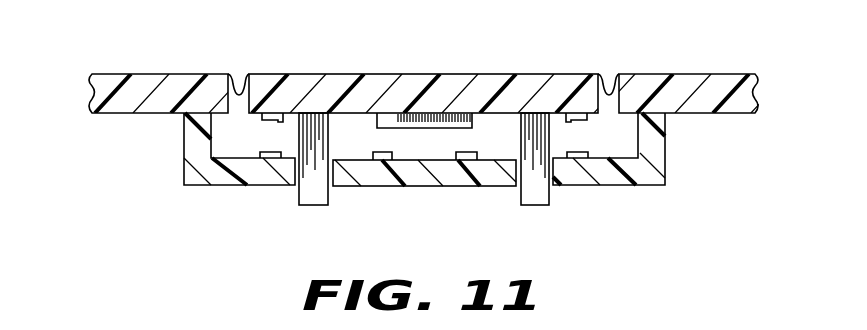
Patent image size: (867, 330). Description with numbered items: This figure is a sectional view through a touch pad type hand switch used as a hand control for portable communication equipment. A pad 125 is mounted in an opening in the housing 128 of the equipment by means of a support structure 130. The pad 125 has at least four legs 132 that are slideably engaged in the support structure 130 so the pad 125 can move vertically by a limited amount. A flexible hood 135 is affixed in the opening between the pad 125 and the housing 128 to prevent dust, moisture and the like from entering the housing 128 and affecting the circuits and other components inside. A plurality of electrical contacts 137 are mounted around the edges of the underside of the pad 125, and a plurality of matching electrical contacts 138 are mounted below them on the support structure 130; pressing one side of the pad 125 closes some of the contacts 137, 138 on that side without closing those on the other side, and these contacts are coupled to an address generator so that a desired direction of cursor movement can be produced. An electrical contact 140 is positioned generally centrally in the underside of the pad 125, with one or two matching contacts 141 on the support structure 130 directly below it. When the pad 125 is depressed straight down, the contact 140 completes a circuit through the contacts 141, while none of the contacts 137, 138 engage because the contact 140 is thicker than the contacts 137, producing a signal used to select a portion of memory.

The pad 125 is at (495, 73).
The housing 128 is at (150, 73).
The support structure 130 is at (188, 146).
The legs 132 is at (314, 205).
The flexible hood 135 is at (240, 73).
The electrical contacts 137 is at (281, 124).
The matching electrical contacts 138 is at (250, 160).
The electrical contact 140 is at (380, 125).
The matching contacts 141 is at (487, 160).